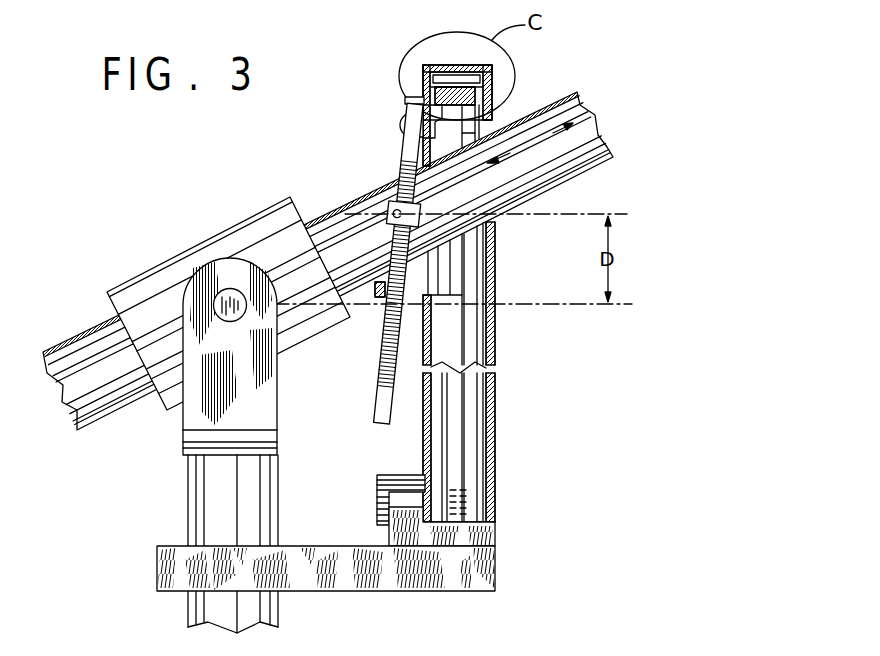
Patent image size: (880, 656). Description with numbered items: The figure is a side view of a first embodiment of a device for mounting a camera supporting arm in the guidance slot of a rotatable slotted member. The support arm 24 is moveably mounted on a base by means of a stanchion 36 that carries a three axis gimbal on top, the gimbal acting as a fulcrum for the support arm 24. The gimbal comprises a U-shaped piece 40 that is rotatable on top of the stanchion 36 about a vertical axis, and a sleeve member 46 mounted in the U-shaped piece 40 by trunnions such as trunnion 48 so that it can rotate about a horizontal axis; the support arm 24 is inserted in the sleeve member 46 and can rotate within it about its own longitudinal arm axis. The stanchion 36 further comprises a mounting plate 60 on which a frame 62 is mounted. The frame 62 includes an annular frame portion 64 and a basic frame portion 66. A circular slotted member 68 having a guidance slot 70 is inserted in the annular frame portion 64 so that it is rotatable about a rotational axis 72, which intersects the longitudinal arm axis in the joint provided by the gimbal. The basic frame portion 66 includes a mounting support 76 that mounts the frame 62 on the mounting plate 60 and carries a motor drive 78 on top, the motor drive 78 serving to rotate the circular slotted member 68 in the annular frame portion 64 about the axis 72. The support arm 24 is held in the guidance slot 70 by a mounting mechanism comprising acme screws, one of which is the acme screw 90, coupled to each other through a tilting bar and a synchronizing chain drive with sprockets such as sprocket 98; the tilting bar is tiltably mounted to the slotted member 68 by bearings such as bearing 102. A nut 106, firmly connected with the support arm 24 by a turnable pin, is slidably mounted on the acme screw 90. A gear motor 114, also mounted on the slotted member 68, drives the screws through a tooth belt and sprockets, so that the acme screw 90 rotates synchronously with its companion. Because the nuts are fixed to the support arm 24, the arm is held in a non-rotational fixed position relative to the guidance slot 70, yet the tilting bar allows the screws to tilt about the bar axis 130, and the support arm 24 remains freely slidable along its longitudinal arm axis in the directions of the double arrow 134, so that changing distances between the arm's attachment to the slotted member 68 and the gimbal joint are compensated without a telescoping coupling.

The support arm 24 is at (78, 328).
The stanchion 36 is at (188, 520).
The U-shaped piece 40 is at (192, 422).
The sleeve member 46 is at (165, 275).
The trunnion 48 is at (230, 288).
The mounting plate 60 is at (353, 585).
The frame 62 is at (500, 72).
The annular frame portion 64 is at (493, 367).
The basic frame portion 66 is at (495, 478).
The circular slotted member 68 is at (477, 290).
The guidance slot 70 is at (455, 270).
The rotational axis 72 is at (462, 306).
The mounting support 76 is at (445, 537).
The motor drive 78 is at (380, 498).
The acme screw 90 is at (378, 392).
The sprocket 98 is at (405, 97).
The bearing 102 is at (423, 111).
The nut 106 is at (388, 216).
The gear motor 114 is at (375, 293).
The bar axis 130 is at (410, 124).
The double arrow 134 is at (551, 134).